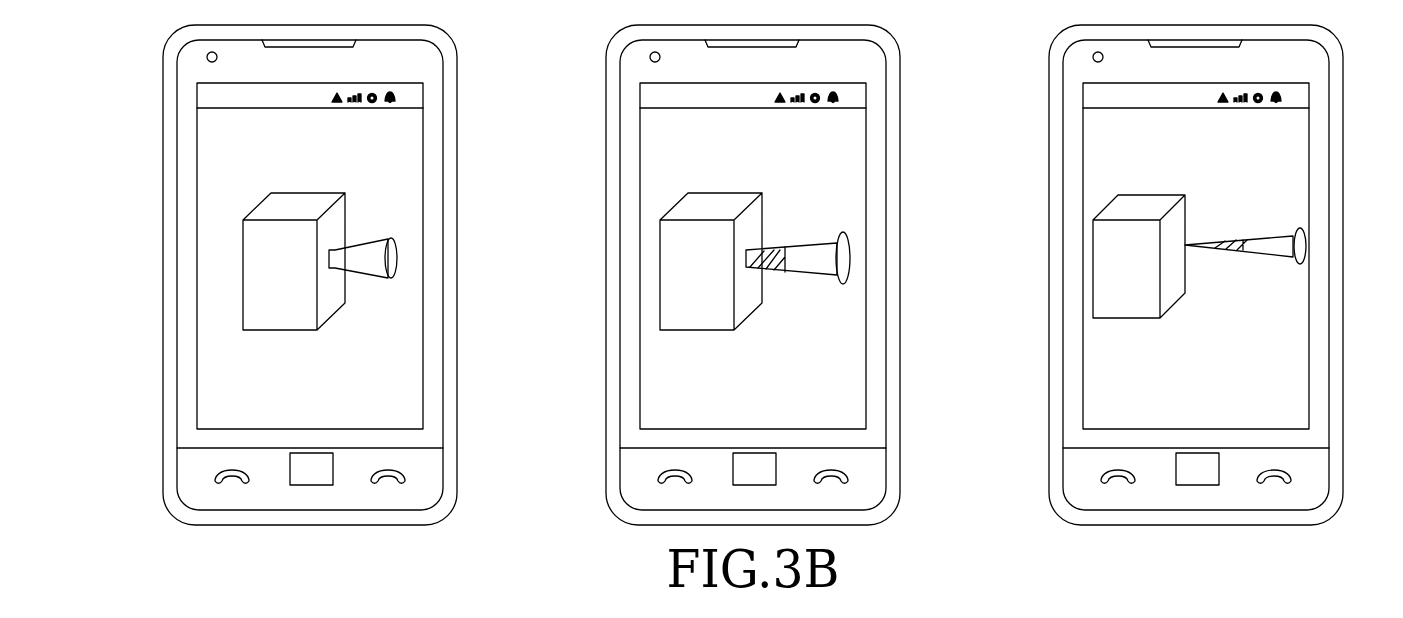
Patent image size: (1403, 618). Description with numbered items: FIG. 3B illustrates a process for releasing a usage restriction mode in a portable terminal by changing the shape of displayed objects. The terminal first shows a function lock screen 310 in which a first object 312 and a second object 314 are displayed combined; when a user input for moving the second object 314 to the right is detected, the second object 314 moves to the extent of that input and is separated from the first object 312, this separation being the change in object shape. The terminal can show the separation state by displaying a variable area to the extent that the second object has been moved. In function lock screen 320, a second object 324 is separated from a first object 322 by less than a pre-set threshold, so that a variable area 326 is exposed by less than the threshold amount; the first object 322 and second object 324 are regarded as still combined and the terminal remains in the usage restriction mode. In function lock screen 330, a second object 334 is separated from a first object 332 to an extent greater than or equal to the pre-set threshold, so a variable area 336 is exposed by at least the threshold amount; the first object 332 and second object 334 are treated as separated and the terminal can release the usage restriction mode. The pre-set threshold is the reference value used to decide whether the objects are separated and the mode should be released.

The function lock screen 310 is at (314, 349).
The first object 312 is at (297, 194).
The second object 314 is at (389, 240).
The function lock screen 320 is at (757, 349).
The first object 322 is at (712, 194).
The second object 324 is at (816, 250).
The variable area 326 is at (775, 268).
The function lock screen 330 is at (1200, 349).
The first object 332 is at (1145, 200).
The second object 334 is at (1272, 240).
The variable area 336 is at (1225, 252).